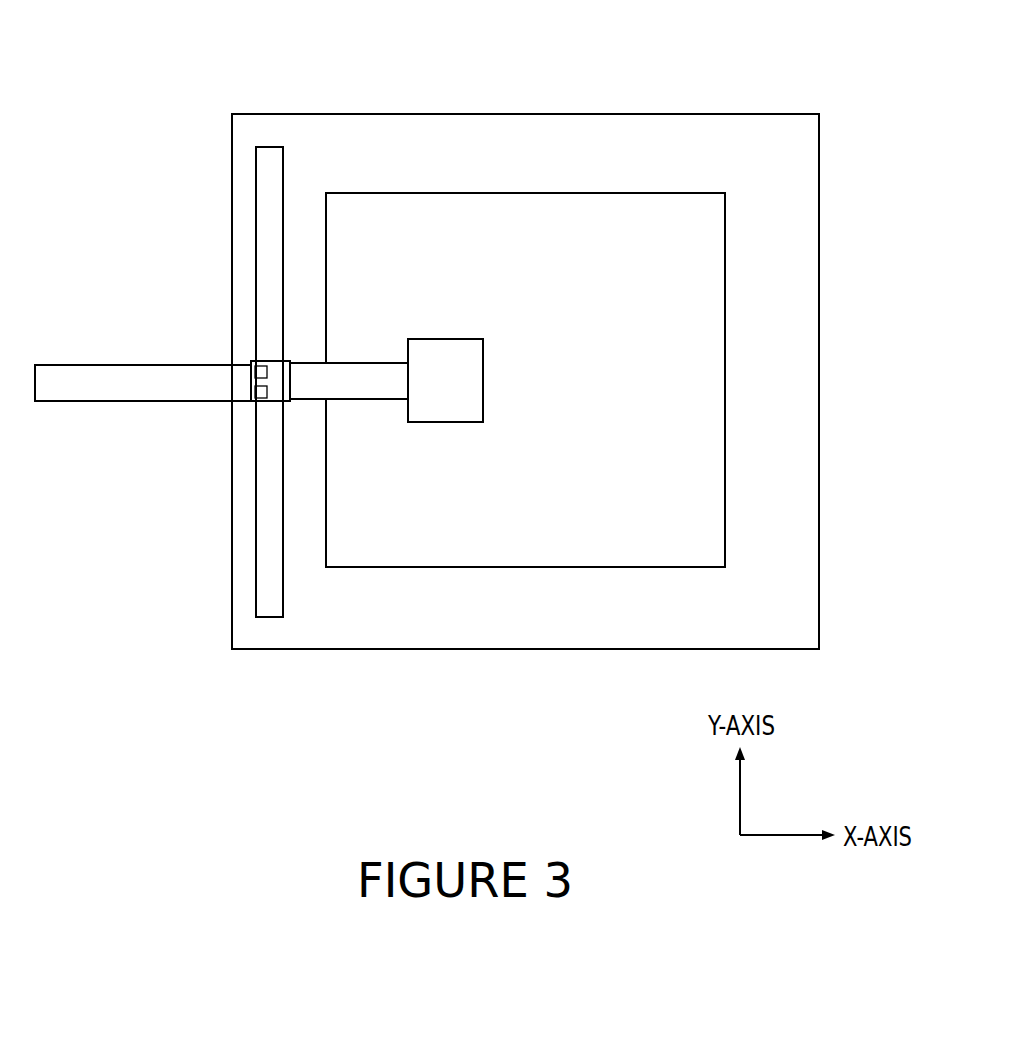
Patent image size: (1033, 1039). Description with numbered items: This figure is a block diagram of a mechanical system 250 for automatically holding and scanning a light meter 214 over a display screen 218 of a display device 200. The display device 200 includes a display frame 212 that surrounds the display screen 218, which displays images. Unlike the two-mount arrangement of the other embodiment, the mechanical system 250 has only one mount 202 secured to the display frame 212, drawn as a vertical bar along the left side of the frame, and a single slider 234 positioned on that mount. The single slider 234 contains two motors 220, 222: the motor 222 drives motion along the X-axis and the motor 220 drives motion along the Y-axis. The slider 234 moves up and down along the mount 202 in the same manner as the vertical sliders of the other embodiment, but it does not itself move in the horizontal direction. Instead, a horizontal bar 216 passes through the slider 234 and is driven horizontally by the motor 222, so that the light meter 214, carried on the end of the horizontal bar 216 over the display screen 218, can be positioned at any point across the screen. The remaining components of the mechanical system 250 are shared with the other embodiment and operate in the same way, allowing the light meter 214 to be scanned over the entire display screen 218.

The display device 200 is at (749, 76).
The display frame 212 is at (618, 113).
The display screen 218 is at (437, 568).
The mechanical system 250 is at (259, 132).
The mount 202 is at (256, 205).
The horizontal bar 216 is at (126, 365).
The slider 234 is at (286, 401).
The motor 220 is at (255, 366).
The motor 222 is at (255, 398).
The light meter 214 is at (483, 347).